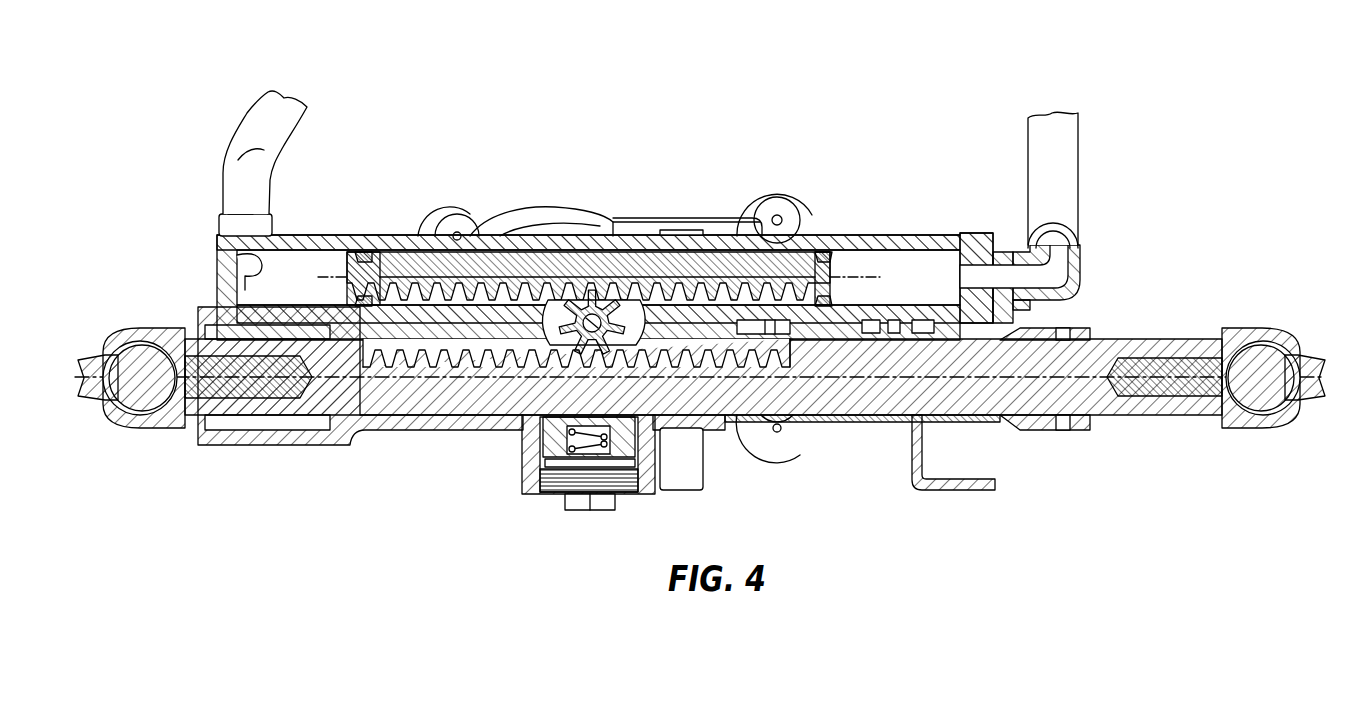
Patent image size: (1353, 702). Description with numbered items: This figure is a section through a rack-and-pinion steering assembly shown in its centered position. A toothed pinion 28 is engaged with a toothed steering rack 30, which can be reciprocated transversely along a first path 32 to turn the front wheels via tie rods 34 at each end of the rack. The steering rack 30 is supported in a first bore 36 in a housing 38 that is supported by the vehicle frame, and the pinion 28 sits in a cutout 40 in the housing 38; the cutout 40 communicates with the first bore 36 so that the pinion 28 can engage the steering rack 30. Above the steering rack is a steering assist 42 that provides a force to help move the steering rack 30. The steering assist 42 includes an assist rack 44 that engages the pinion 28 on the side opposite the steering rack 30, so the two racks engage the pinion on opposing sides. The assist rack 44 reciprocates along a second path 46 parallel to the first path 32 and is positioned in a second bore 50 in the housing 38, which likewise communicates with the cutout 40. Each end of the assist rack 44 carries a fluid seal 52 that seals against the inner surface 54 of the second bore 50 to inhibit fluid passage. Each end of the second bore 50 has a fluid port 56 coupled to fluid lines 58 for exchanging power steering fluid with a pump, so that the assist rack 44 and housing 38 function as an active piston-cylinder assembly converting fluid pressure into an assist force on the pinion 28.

The toothed pinion 28 is at (605, 320).
The toothed steering rack 30 is at (700, 371).
The first path 32 is at (815, 378).
The tie rods 34 is at (143, 392).
The first bore 36 is at (296, 422).
The housing 38 is at (398, 242).
The cutout 40 is at (548, 318).
The steering assist 42 is at (1188, 208).
The assist rack 44 is at (493, 263).
The second path 46 is at (862, 278).
The second bore 50 is at (605, 244).
The fluid seal 52 is at (368, 258).
The inner surface 54 is at (900, 307).
The fluid port 56 is at (235, 263).
The fluid lines 58 is at (262, 117).